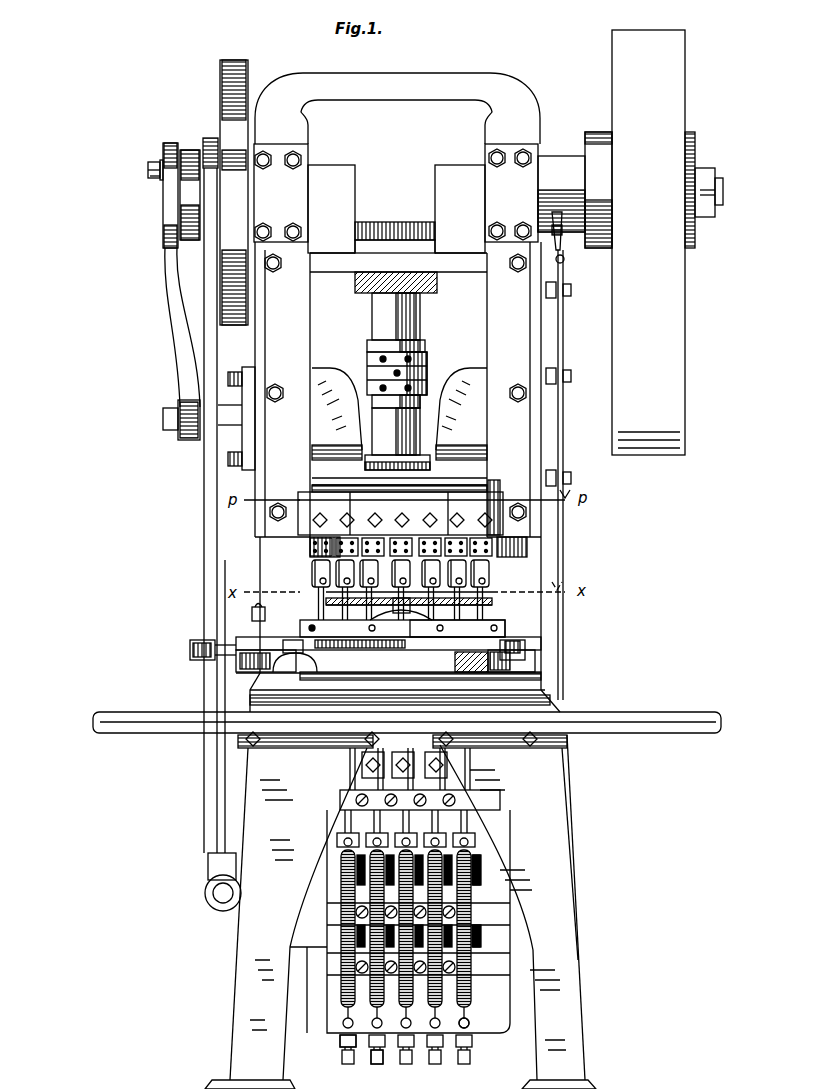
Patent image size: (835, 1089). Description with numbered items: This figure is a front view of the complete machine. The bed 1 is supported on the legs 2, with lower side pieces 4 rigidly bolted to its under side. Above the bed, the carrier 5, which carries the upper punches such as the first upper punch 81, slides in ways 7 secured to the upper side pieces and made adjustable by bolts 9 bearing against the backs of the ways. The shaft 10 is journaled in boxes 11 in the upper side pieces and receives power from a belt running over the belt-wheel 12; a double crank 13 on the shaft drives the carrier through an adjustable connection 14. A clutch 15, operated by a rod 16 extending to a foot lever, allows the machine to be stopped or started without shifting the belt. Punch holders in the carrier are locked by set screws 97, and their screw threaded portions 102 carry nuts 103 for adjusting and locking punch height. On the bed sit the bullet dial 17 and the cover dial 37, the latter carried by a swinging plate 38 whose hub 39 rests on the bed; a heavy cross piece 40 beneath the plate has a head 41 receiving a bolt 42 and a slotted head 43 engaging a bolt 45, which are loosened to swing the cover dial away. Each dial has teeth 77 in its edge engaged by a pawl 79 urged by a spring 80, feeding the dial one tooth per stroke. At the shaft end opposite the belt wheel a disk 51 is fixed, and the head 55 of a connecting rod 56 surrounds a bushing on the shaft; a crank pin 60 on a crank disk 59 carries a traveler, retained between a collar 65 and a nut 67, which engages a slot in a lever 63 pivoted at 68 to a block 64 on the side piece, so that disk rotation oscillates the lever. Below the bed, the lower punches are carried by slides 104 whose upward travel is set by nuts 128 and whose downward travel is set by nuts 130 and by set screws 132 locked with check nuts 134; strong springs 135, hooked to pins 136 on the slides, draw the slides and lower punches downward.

The bed 1 is at (555, 687).
The legs 2 is at (230, 968).
The lower side pieces 4 is at (495, 1018).
The carrier 5 is at (399, 468).
The ways 7 is at (308, 340).
The bolts 9 is at (278, 389).
The shaft 10 is at (723, 192).
The boxes 11 is at (396, 193).
The belt-wheel 12 is at (616, 242).
The double crank 13 is at (396, 209).
The adjustable connection 14 is at (420, 318).
The clutch 15 is at (562, 245).
The rod 16 is at (545, 641).
The bullet dial 17 is at (470, 606).
The cover dial 37 is at (312, 620).
The swinging plate 38 is at (500, 638).
The hub 39 is at (402, 668).
The cross piece 40 is at (497, 670).
The head 41 is at (540, 661).
The bolt 42 is at (522, 640).
The head 43 is at (268, 672).
The bolt 45 is at (320, 666).
The disk 51 is at (222, 103).
The head 55 is at (205, 140).
The connecting rod 56 is at (212, 302).
The crank disk 59 is at (183, 208).
The crank pin 60 is at (150, 170).
The lever 63 is at (170, 283).
The block 64 is at (247, 367).
The collar 65 is at (177, 145).
The nut 67 is at (148, 178).
The pivot 68 is at (170, 432).
The teeth 77 is at (444, 668).
The pawl 79 is at (312, 600).
The spring 80 is at (256, 620).
The first upper punch 81 is at (488, 592).
The set screws 97 is at (494, 492).
The screw threaded portion 102 is at (320, 552).
The nuts 103 is at (485, 545).
The slides 104 is at (345, 817).
The nuts 128 is at (475, 878).
The nuts 130 is at (475, 930).
The set screws 132 is at (378, 1064).
The check nuts 134 is at (343, 1042).
The springs 135 is at (350, 992).
The pins 136 is at (470, 1026).